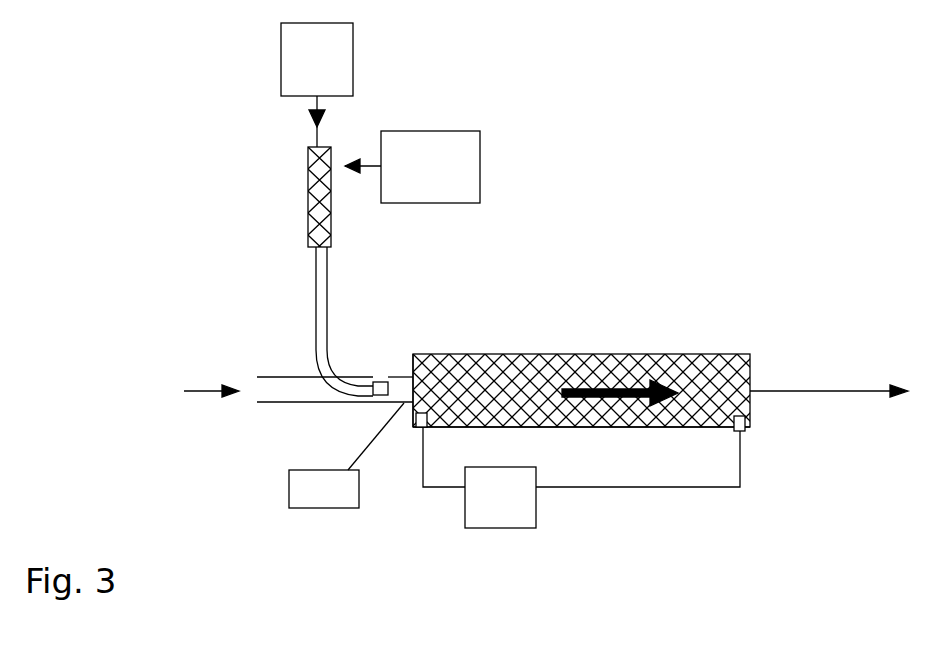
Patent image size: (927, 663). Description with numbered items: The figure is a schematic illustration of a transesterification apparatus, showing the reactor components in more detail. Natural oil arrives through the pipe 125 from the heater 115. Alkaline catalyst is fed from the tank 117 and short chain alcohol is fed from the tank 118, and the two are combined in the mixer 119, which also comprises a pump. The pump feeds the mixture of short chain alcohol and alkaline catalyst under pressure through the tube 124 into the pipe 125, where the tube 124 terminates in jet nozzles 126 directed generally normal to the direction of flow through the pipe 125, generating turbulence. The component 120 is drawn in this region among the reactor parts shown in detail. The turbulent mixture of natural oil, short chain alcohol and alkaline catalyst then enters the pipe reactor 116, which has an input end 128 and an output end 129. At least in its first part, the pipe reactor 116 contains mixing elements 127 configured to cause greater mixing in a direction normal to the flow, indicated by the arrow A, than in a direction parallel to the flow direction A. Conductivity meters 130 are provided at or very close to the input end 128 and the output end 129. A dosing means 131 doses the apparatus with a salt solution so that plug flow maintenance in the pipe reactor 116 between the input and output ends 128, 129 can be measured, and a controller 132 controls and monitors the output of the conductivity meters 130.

The heater 115 is at (153, 392).
The pipe reactor 116 is at (580, 427).
The tank 117 is at (317, 85).
The tank 118 is at (412, 167).
The mixer 119 is at (308, 193).
The component 120 is at (388, 377).
The tube 124 is at (316, 335).
The pipe 125 is at (276, 377).
The jet nozzles 126 is at (373, 385).
The mixing elements 127 is at (497, 375).
The input end 128 is at (413, 354).
The output end 129 is at (750, 354).
The conductivity meters 130 is at (413, 432).
The dosing means 131 is at (346, 455).
The controller 132 is at (581, 477).
The flow direction arrow A is at (607, 383).